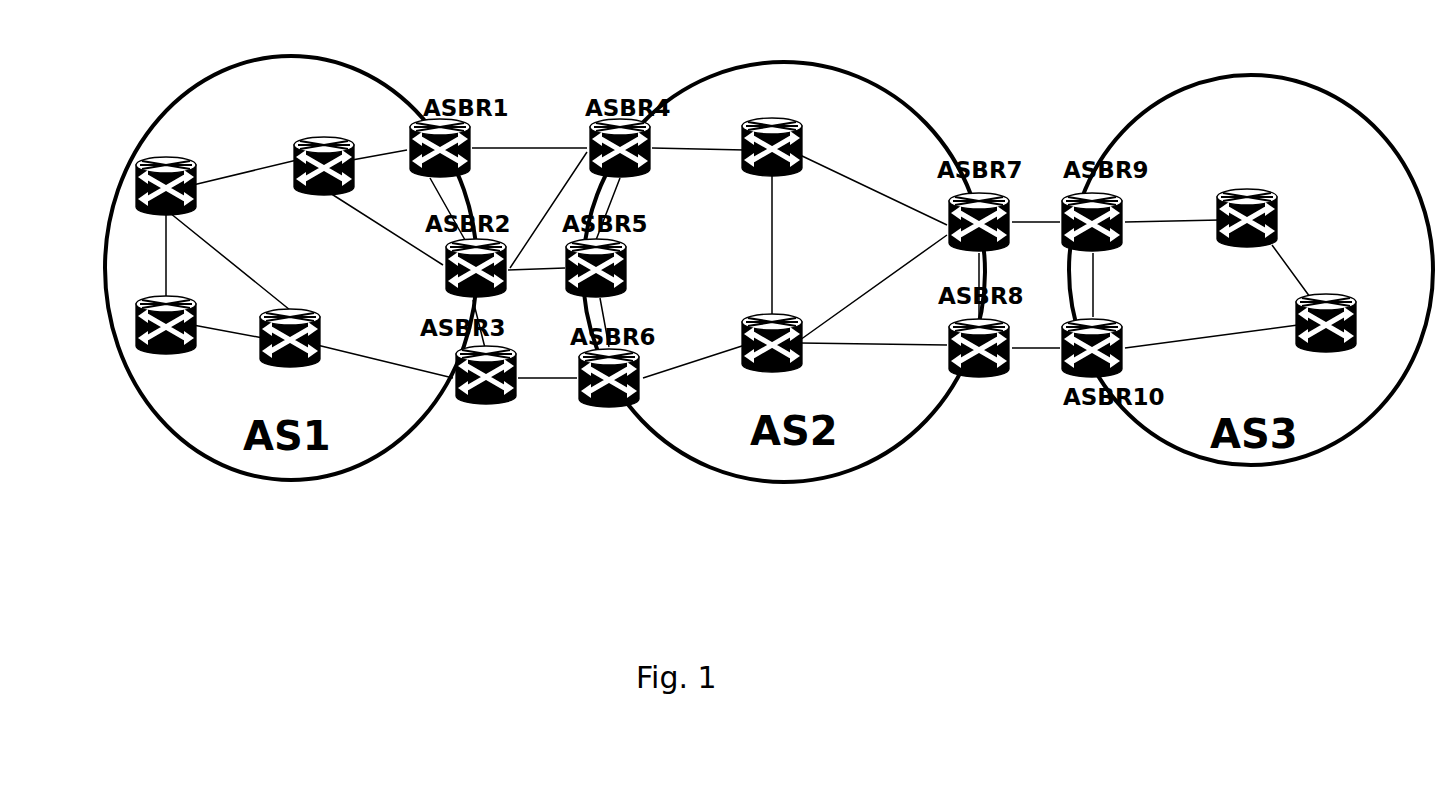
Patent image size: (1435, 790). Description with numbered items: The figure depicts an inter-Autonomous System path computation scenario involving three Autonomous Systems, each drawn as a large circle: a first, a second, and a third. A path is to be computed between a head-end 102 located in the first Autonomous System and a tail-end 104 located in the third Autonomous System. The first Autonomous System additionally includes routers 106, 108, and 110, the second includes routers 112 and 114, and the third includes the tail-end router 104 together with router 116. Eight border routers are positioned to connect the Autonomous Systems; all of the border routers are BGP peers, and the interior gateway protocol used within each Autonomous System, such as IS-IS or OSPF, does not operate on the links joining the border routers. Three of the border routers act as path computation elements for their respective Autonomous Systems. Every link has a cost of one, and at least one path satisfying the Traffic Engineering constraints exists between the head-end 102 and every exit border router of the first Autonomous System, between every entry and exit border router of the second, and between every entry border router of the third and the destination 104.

The head-end 102 is at (184, 160).
The tail-end 104 is at (1268, 192).
The router 106 is at (185, 297).
The router 108 is at (343, 137).
The router 110 is at (311, 311).
The router 112 is at (793, 120).
The router 114 is at (794, 316).
The router 116 is at (1349, 298).